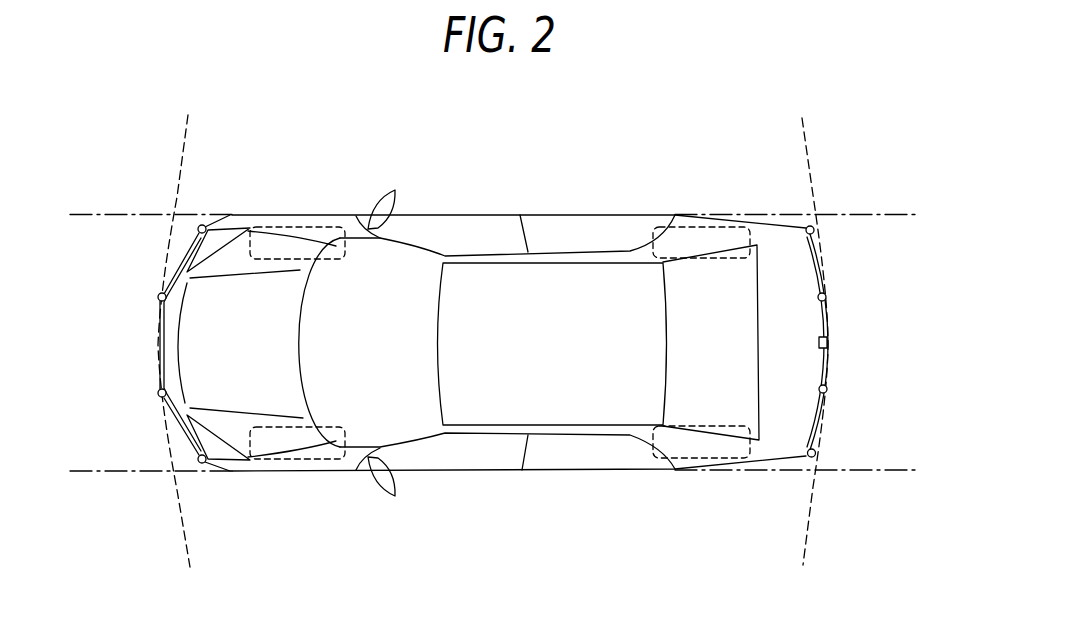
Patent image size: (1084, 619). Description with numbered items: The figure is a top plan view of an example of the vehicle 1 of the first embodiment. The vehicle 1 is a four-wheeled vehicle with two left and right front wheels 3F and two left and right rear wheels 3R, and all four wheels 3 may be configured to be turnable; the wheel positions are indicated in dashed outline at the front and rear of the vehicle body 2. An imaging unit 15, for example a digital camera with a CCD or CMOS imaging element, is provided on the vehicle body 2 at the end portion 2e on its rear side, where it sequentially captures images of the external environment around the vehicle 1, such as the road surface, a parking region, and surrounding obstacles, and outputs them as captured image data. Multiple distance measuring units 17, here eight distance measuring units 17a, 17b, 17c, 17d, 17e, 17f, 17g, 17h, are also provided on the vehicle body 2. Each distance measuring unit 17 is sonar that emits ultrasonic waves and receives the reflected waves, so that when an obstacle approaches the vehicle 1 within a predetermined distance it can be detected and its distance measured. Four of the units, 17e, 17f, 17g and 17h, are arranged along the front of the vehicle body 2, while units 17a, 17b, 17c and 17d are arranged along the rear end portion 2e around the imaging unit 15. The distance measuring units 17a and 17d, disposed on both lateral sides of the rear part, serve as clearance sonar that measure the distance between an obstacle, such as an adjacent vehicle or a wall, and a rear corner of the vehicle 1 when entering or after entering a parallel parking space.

The vehicle 1 is at (609, 128).
The vehicle body 2 is at (772, 215).
The end portion on the rear side of the vehicle body 2e is at (830, 363).
The wheels 3 is at (500, 342).
The front wheels 3F is at (291, 226).
The rear wheels 3R is at (700, 226).
The imaging unit 15 is at (828, 342).
The distance measuring units 17 is at (498, 309).
The distance measuring unit 17a is at (816, 452).
The distance measuring unit 17b is at (827, 389).
The distance measuring unit 17c is at (826, 293).
The distance measuring unit 17d is at (814, 227).
The distance measuring unit 17e is at (198, 230).
The distance measuring unit 17f is at (158, 297).
The distance measuring unit 17g is at (158, 394).
The distance measuring unit 17h is at (198, 459).